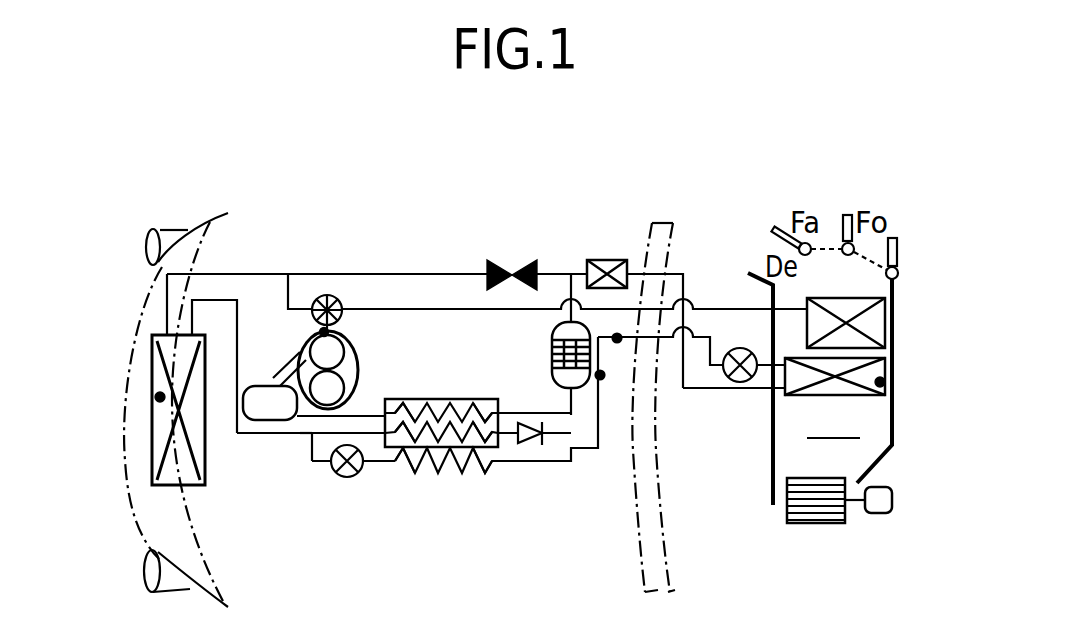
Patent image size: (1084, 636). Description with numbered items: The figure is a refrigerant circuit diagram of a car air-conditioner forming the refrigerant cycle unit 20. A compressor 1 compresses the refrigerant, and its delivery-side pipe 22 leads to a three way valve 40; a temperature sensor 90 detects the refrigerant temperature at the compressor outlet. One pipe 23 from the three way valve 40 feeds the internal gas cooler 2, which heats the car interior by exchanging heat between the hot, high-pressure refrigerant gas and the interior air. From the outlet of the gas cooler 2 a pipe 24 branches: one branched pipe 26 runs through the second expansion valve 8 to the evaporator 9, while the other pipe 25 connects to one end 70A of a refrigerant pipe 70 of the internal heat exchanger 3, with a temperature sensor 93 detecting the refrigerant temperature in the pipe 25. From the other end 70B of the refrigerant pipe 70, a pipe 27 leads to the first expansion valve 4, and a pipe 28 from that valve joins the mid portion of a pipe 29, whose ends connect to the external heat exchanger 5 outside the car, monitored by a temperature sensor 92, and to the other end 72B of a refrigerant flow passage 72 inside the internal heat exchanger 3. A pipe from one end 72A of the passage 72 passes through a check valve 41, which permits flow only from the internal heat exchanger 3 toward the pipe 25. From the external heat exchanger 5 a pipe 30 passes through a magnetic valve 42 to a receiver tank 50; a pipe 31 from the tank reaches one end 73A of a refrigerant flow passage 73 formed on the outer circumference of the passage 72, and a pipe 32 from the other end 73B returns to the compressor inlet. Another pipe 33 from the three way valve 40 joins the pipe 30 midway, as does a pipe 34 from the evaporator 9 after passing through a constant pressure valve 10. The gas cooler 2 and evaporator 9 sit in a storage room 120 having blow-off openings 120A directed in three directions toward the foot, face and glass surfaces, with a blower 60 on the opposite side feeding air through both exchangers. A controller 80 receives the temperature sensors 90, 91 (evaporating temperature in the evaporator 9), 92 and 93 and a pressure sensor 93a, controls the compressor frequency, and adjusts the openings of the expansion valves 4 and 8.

The compressor 1 is at (358, 351).
The internal gas cooler 2 is at (887, 313).
The internal heat exchanger 3 is at (462, 522).
The first expansion valve 4 is at (336, 474).
The external heat exchanger 5 is at (157, 372).
The second expansion valve 8 is at (746, 383).
The evaporator 9 is at (887, 357).
The constant pressure valve 10 is at (613, 259).
The refrigerant cycle unit 20 is at (722, 183).
The pipe 22 is at (340, 329).
The pipe 23 is at (437, 302).
The pipe 24 is at (738, 308).
The pipe 25 is at (649, 332).
The pipe 26 is at (707, 335).
The pipe 27 is at (380, 468).
The pipe 28 is at (312, 447).
The pipe 29 is at (245, 434).
The pipe 30 is at (218, 273).
The pipe 31 is at (578, 415).
The pipe 32 is at (304, 434).
The pipe 33 is at (300, 288).
The pipe 34 is at (730, 390).
The three way valve 40 is at (325, 296).
The check valve 41 is at (540, 457).
The magnetic valve 42 is at (498, 257).
The receiver tank 50 is at (560, 322).
The blower 60 is at (820, 524).
The refrigerant pipe 70 is at (478, 474).
The one end of refrigerant pipe 70A is at (494, 472).
The other end of refrigerant pipe 70B is at (404, 452).
The refrigerant flow passage 72 is at (437, 400).
The one end of refrigerant flow passage 72A is at (507, 440).
The other end of refrigerant flow passage 72B is at (384, 446).
The refrigerant flow passage 73 is at (455, 405).
The one end of refrigerant flow passage 73A is at (502, 410).
The other end of refrigerant flow passage 73B is at (386, 405).
The controller 80 is at (260, 387).
The temperature sensor 90 is at (313, 328).
The temperature sensor 91 is at (883, 383).
The temperature sensor 92 is at (160, 397).
The temperature sensor 93 is at (617, 340).
The pressure sensor 93a is at (603, 375).
The storage room 120 is at (833, 420).
The blow-off openings 120A is at (828, 275).